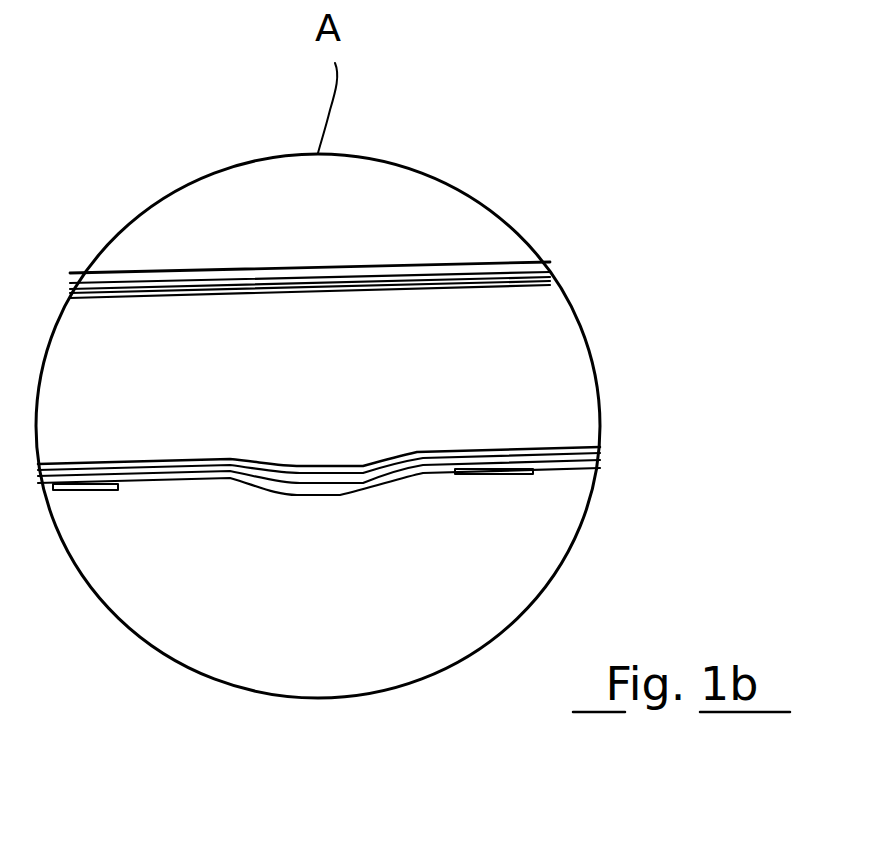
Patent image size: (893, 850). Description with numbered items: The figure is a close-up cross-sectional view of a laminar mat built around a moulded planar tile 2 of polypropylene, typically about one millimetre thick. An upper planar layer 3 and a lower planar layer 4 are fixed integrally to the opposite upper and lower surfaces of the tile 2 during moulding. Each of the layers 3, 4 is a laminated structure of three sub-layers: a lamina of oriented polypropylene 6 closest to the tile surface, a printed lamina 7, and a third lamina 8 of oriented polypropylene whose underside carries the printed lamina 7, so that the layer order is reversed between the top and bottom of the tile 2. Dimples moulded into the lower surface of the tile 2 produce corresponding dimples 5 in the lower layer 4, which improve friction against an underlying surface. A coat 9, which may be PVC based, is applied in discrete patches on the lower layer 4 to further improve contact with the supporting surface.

The moulded planar tile 2 is at (131, 328).
The upper planar layer 3 is at (384, 250).
The lower planar layer 4 is at (230, 518).
The dimples 5 is at (337, 494).
The lamina of oriented polypropylene 6 is at (553, 280).
The printed lamina 7 is at (553, 273).
The third lamina of oriented polypropylene 8 is at (550, 262).
The coat 9 is at (83, 492).